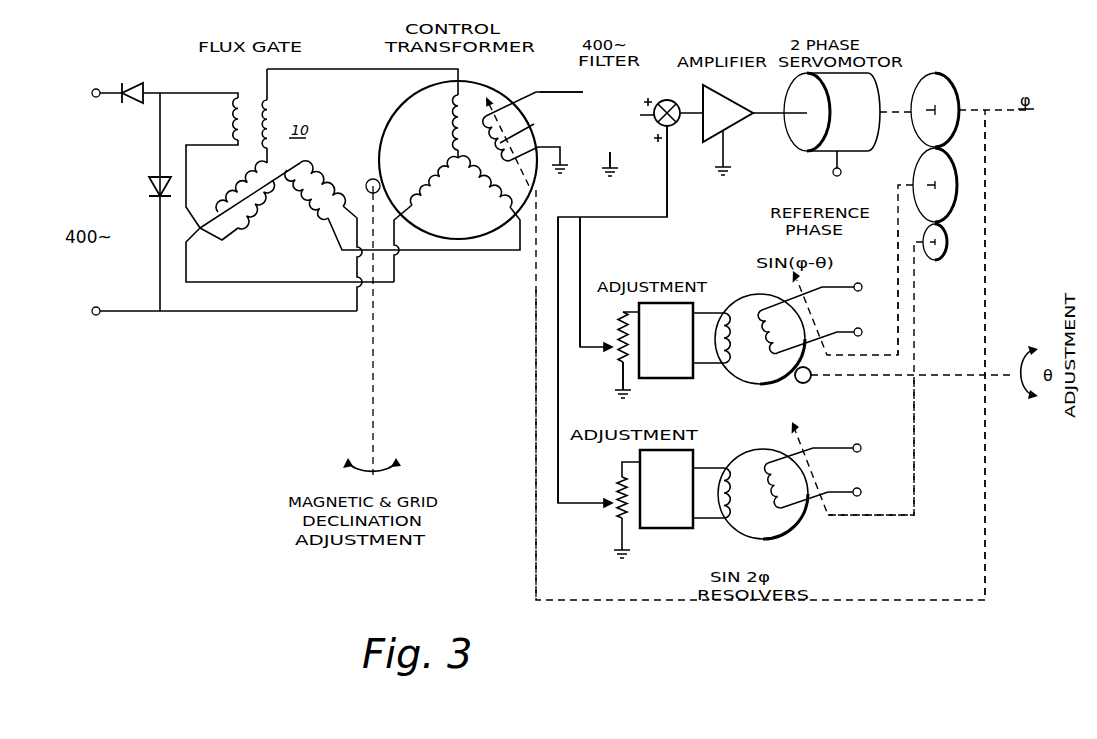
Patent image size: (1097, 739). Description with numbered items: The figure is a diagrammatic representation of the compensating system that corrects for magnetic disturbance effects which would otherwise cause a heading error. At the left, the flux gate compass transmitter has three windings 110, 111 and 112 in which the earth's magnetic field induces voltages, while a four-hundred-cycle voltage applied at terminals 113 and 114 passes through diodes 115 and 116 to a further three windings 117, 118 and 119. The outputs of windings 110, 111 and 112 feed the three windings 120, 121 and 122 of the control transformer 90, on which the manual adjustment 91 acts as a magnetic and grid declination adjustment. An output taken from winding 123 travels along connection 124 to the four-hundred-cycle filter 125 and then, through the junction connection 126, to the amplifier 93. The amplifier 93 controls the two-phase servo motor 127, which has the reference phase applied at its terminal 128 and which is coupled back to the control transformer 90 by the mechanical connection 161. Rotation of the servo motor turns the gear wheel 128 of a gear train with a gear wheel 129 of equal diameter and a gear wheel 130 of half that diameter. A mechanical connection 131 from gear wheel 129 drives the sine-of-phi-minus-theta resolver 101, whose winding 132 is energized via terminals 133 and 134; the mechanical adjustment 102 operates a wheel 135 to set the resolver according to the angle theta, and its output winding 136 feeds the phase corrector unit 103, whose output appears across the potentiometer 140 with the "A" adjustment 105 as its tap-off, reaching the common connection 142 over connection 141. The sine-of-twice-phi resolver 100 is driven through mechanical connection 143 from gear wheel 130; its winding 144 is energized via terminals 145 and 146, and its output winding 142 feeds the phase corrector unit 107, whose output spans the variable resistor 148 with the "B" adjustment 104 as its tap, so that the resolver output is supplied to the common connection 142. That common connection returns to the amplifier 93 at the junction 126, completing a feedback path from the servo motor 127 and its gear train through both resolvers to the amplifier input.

The control transformer 90 is at (472, 82).
The manual heading adjust control 91 is at (398, 460).
The amplifier unit 93 is at (736, 96).
The sin 2φ resolver unit 100 is at (765, 540).
The sin (φ-θ) resolver unit 101 is at (762, 384).
The mechanical adjustment control 102 is at (1000, 365).
The phase corrector unit 103 is at (697, 304).
The "B" adjustment control 104 is at (608, 500).
The "A" adjustment control 105 is at (608, 345).
The phase corrector unit 107 is at (694, 530).
The winding 110 is at (272, 106).
The winding 111 is at (308, 220).
The winding 112 is at (234, 192).
The terminal 113 is at (92, 311).
The terminal 114 is at (92, 93).
The diode 115 is at (133, 83).
The diode 116 is at (148, 186).
The winding 117 is at (234, 120).
The winding 118 is at (243, 226).
The winding 119 is at (320, 188).
The winding 120 is at (452, 120).
The winding 121 is at (494, 200).
The winding 122 is at (432, 190).
The winding 123 is at (520, 126).
The connection 124 is at (566, 92).
The 400-cycle filter 125 is at (610, 160).
The junction connection 126 is at (666, 99).
The 2-phase servo motor unit 127 is at (812, 152).
The reference phase terminal / gear wheel 128 is at (834, 176).
The gear wheel 129 is at (957, 185).
The gear wheel 130 is at (947, 242).
The mechanical connection 131 is at (898, 240).
The winding 132 is at (760, 340).
The terminal 133 is at (856, 283).
The terminal 134 is at (881, 318).
The wheel 135 is at (812, 382).
The winding 136 is at (728, 366).
The potentiometer 140 is at (618, 362).
The connection 141 is at (581, 238).
The common connection / winding 142 is at (668, 195).
The mechanical connection 143 is at (888, 516).
The winding 144 is at (800, 528).
The terminal 145 is at (885, 427).
The terminal 146 is at (885, 466).
The variable resistor / electrical connection 148 is at (557, 388).
The mechanical connection 161 is at (986, 133).